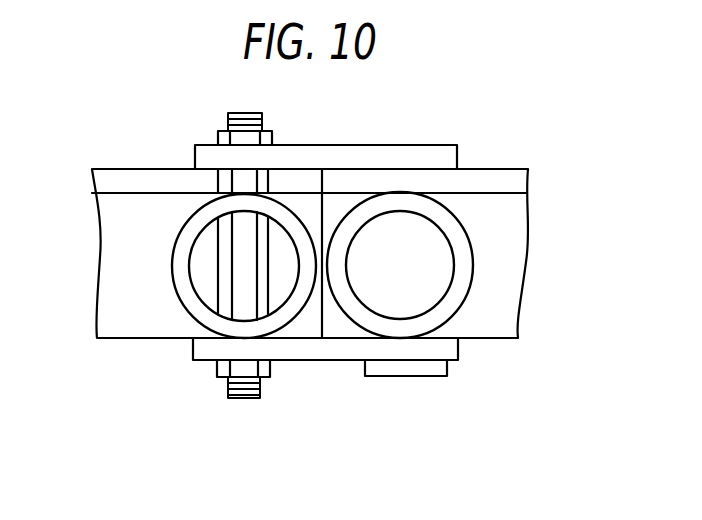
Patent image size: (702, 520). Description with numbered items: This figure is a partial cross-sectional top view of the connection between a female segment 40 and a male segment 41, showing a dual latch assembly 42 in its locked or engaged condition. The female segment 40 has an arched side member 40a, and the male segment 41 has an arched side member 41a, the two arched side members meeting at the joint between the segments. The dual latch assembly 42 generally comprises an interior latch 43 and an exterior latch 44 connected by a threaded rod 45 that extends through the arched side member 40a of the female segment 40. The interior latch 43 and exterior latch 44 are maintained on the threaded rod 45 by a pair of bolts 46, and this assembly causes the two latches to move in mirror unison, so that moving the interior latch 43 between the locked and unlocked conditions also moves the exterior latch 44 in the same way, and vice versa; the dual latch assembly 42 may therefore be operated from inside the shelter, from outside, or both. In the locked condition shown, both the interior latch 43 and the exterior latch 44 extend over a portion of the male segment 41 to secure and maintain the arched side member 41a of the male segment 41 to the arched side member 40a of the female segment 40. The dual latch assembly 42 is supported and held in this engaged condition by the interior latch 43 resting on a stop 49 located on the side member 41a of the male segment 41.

The female segment 40 is at (122, 262).
The arched side member of female segment 40a is at (182, 227).
The male segment 41 is at (500, 303).
The arched side member of male segment 41a is at (473, 258).
The dual latch assembly 42 is at (213, 405).
The interior latch 43 is at (202, 357).
The exterior latch 44 is at (345, 153).
The threaded rod 45 is at (243, 400).
The bolts 46 is at (272, 131).
The stop 49 is at (418, 367).